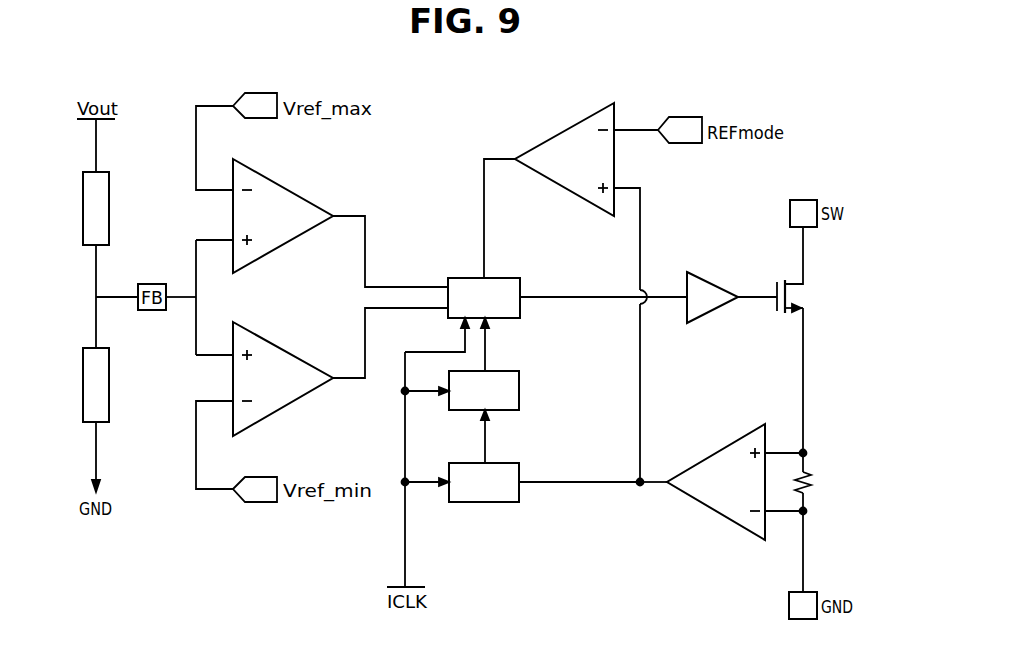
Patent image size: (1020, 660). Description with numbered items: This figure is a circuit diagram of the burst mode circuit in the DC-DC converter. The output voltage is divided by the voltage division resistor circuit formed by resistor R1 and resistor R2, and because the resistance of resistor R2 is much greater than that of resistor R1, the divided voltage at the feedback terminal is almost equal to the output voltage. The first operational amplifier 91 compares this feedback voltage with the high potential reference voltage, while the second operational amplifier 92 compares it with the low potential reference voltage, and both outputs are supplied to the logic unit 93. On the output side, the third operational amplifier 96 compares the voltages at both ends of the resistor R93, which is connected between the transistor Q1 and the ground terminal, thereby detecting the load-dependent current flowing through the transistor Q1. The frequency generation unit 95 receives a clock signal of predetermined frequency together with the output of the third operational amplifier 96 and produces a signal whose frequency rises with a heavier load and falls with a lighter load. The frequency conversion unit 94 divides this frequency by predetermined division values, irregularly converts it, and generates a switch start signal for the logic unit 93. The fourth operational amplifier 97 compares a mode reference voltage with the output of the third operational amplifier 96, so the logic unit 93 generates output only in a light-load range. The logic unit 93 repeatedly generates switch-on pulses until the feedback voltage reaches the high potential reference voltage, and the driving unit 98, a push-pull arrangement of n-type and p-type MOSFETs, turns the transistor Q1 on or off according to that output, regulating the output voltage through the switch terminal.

The first operational amplifier 91 is at (283, 227).
The second operational amplifier 92 is at (283, 387).
The logic unit 93 is at (495, 307).
The frequency conversion unit 94 is at (497, 401).
The frequency generation unit 95 is at (497, 492).
The third operational amplifier 96 is at (734, 494).
The fourth operational amplifier 97 is at (583, 171).
The driving unit 98 is at (714, 305).
The resistor R1 is at (109, 207).
The resistor R2 is at (109, 386).
The resistor R93 is at (824, 482).
The transistor Q1 is at (803, 270).